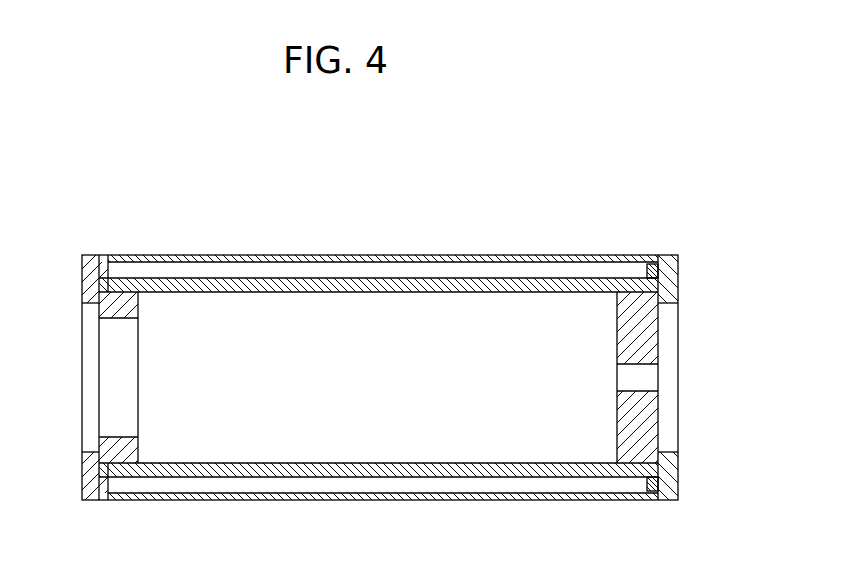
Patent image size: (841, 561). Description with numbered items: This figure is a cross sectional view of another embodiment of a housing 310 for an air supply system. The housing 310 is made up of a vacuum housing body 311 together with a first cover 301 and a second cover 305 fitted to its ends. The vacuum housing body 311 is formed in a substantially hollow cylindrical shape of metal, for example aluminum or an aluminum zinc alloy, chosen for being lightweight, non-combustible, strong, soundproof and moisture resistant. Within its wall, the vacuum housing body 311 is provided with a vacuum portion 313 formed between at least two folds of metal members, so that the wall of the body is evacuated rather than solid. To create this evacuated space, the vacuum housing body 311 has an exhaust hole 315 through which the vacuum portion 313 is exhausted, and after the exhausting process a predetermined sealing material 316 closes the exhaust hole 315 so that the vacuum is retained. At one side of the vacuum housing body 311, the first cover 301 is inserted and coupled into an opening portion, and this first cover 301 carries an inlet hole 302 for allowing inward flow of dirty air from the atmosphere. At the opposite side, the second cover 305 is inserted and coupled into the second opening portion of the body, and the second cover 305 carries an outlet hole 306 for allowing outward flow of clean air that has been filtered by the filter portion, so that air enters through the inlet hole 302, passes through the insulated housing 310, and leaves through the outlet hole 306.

The housing 310 is at (142, 187).
The vacuum housing body 311 is at (508, 252).
The vacuum portion 313 is at (371, 277).
The exhaust hole 315 is at (653, 253).
The sealing material 316 is at (677, 264).
The first cover 301 is at (660, 318).
The inlet hole 302 is at (652, 380).
The second cover 305 is at (106, 299).
The outlet hole 306 is at (103, 378).